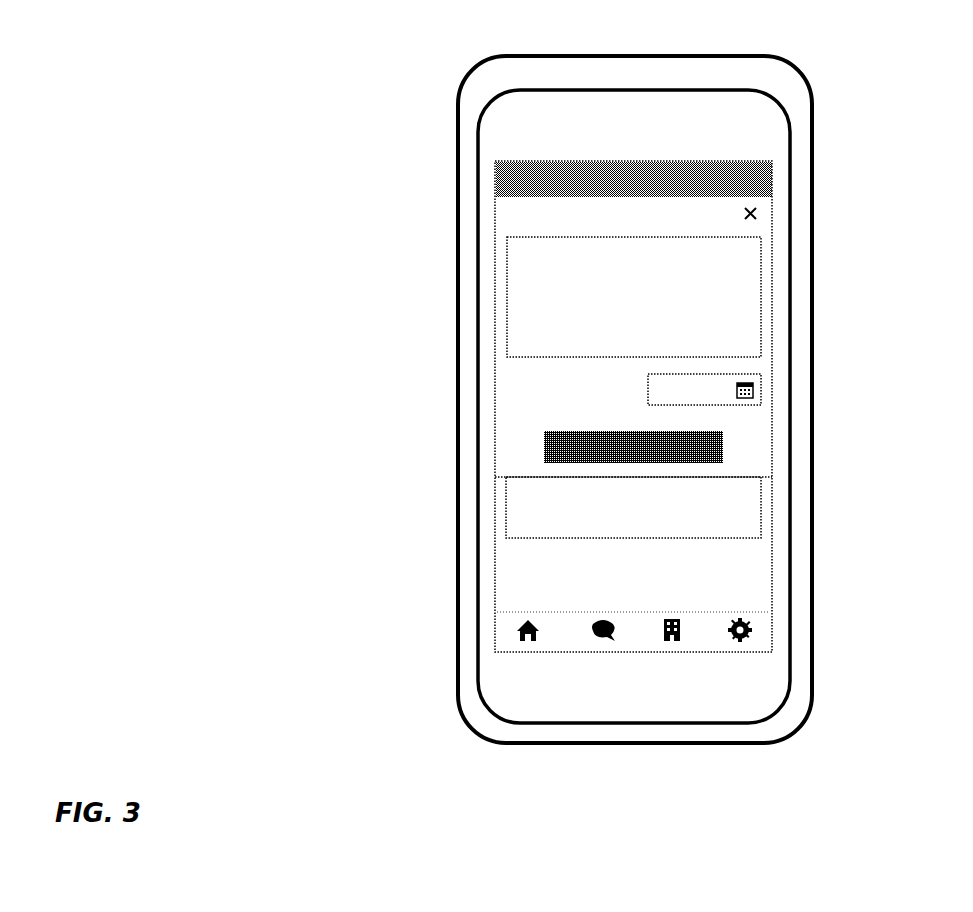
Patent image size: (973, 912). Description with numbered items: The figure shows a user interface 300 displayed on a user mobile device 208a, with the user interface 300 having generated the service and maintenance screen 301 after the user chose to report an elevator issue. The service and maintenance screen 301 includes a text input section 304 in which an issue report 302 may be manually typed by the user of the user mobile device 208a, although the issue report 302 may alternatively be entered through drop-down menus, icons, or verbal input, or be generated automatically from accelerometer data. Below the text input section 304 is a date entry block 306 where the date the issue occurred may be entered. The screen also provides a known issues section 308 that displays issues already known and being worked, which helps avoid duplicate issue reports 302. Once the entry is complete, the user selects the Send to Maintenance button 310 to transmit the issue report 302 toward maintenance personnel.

The user mobile device 208a is at (762, 55).
The user interface 300 is at (493, 237).
The service and maintenance screen 301 is at (748, 158).
The issue report 302 is at (848, 292).
The text input section 304 is at (713, 234).
The date entry block 306 is at (781, 377).
The known issues section 308 is at (505, 501).
The Send to Maintenance button 310 is at (732, 445).